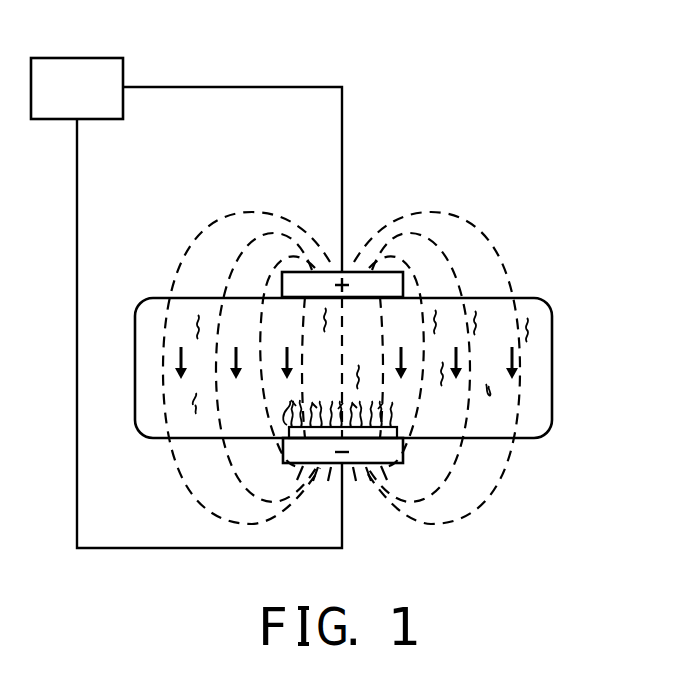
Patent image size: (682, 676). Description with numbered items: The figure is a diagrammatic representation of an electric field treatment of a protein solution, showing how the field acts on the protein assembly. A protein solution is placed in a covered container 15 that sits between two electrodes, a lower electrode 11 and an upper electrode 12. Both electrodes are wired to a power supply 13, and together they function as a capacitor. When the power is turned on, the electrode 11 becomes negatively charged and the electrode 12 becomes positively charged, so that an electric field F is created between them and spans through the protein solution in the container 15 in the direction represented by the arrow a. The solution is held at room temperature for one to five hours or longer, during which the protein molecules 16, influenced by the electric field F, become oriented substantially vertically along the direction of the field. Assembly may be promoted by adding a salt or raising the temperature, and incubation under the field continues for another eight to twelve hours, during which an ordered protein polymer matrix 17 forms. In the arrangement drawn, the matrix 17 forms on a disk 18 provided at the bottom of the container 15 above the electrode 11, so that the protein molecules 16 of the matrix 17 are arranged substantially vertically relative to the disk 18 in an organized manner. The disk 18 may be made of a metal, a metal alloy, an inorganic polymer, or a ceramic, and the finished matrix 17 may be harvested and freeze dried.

The electrode 11 is at (345, 468).
The electrode 12 is at (336, 270).
The power supply 13 is at (72, 68).
The covered container 15 is at (156, 296).
The protein molecules 16 is at (193, 405).
The ordered protein polymer matrix 17 is at (287, 403).
The disk 18 is at (387, 432).
The arrow a is at (515, 360).
The electric field F is at (522, 398).